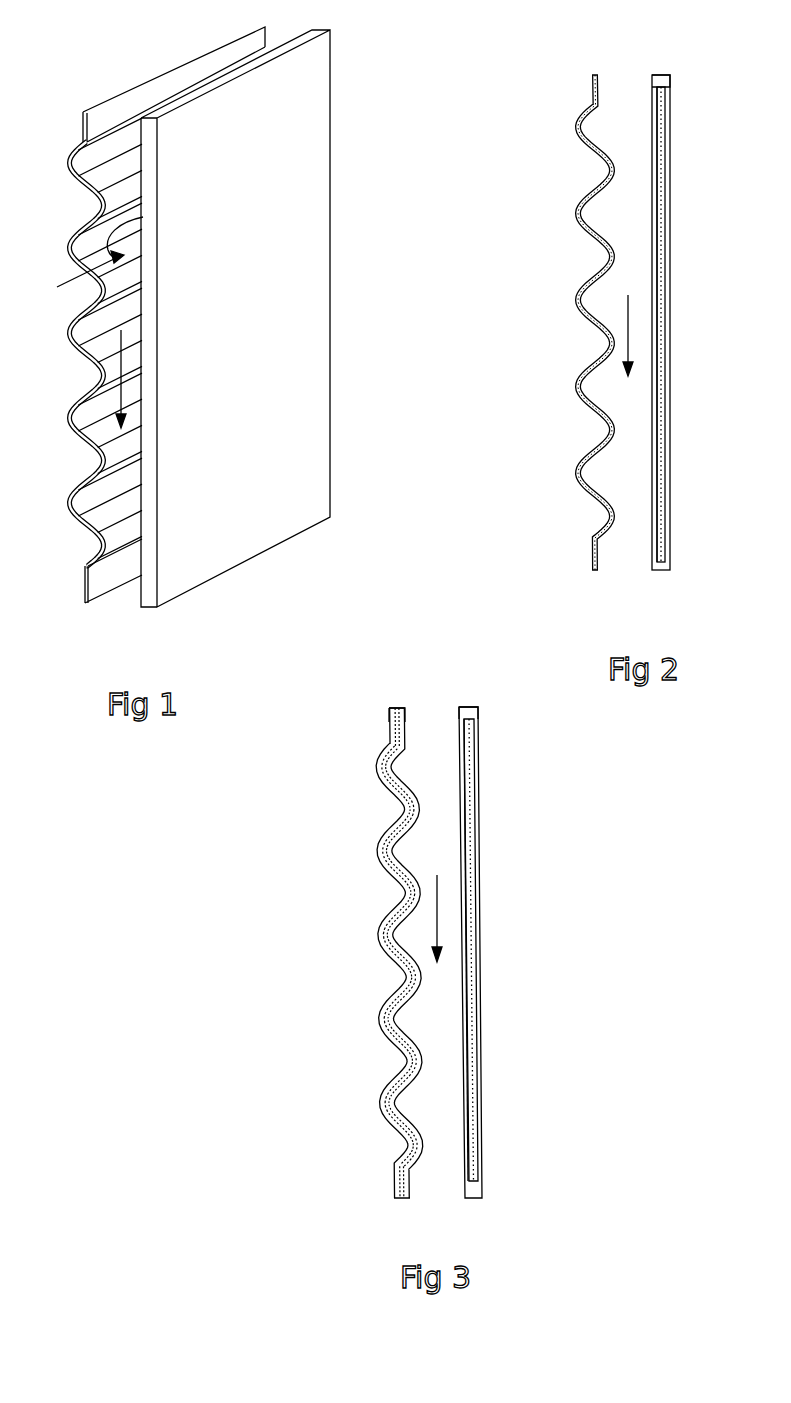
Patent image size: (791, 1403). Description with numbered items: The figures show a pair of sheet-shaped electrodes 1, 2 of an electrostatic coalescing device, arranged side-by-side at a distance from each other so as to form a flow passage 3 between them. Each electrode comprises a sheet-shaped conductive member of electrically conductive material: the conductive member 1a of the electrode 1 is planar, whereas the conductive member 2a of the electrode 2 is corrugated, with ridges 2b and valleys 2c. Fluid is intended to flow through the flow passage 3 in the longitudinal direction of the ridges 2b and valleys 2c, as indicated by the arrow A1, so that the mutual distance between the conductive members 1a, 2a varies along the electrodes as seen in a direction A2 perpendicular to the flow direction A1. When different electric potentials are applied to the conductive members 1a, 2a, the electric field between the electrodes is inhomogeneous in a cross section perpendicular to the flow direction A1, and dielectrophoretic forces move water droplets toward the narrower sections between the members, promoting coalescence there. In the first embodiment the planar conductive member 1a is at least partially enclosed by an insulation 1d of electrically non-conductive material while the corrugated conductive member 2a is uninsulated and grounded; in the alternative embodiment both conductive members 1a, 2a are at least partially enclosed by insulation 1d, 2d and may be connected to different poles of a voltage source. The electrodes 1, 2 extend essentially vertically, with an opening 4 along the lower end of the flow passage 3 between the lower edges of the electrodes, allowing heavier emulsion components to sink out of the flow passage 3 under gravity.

In FIG. 1, the electrode 1 is at (322, 98).
In FIG. 2, the electrode 1 is at (666, 58).
In FIG. 3, the electrode 1 is at (470, 686).
In FIG. 2, the planar conductive member 1a is at (664, 148).
In FIG. 3, the planar conductive member 1a is at (474, 777).
In FIG. 2, the insulation 1d is at (667, 83).
In FIG. 3, the insulation 1d is at (474, 718).
In FIG. 1, the electrode 2 is at (114, 108).
In FIG. 2, the electrode 2 is at (571, 73).
In FIG. 3, the electrode 2 is at (372, 698).
In FIG. 2, the corrugated conductive member 2a is at (597, 187).
In FIG. 3, the corrugated conductive member 2a is at (400, 790).
In FIG. 2, the ridges 2b is at (620, 437).
In FIG. 2, the valleys 2c is at (586, 390).
In FIG. 3, the insulation 2d is at (387, 715).
In FIG. 1, the flow passage 3 is at (80, 352).
In FIG. 2, the flow passage 3 is at (617, 287).
In FIG. 3, the flow passage 3 is at (443, 850).
In FIG. 1, the opening 4 is at (118, 602).
In FIG. 2, the opening 4 is at (623, 568).
In FIG. 3, the opening 4 is at (440, 1200).
In FIG. 1, the flow direction A1 is at (143, 217).
In FIG. 1, the direction perpendicular to flow direction A2 is at (140, 362).
In FIG. 2, the direction perpendicular to flow direction A2 is at (633, 327).
In FIG. 3, the direction perpendicular to flow direction A2 is at (442, 927).